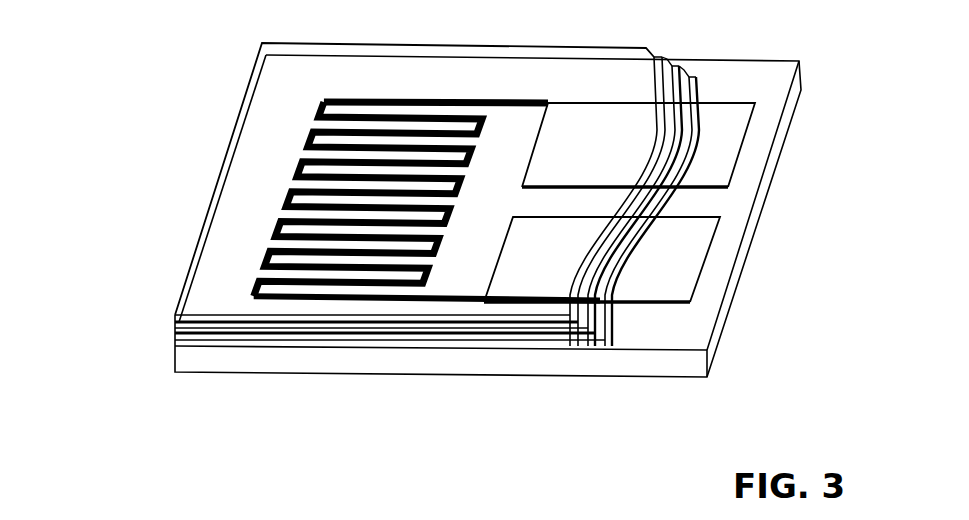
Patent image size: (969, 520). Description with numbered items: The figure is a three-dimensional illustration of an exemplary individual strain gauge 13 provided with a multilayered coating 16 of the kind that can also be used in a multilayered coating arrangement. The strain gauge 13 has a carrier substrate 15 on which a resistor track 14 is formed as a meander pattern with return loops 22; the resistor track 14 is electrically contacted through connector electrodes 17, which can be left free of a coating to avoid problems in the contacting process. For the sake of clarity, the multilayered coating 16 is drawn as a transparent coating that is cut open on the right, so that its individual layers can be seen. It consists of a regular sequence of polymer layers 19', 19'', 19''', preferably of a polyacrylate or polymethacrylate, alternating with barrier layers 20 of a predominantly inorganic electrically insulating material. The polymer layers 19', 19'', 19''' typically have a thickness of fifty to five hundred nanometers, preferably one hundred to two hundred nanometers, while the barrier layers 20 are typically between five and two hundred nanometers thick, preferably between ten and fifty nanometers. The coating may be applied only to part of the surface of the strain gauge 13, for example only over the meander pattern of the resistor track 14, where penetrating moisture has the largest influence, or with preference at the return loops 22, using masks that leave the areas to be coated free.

The strain gauge 13 is at (635, 393).
The resistor track 14 is at (397, 123).
The carrier substrate 15 is at (741, 70).
The multilayered coating 16 is at (265, 176).
The connector electrodes 17 is at (733, 138).
The polymer layer 19' is at (399, 237).
The polymer layer 19'' is at (366, 206).
The polymer layer 19''' is at (408, 201).
The barrier layers 20 is at (177, 320).
The return loops 22 is at (327, 100).